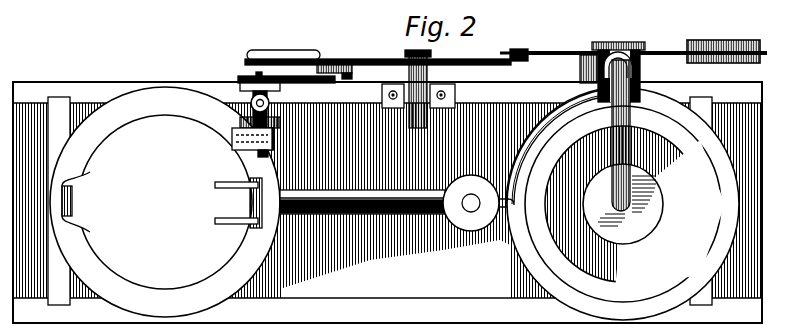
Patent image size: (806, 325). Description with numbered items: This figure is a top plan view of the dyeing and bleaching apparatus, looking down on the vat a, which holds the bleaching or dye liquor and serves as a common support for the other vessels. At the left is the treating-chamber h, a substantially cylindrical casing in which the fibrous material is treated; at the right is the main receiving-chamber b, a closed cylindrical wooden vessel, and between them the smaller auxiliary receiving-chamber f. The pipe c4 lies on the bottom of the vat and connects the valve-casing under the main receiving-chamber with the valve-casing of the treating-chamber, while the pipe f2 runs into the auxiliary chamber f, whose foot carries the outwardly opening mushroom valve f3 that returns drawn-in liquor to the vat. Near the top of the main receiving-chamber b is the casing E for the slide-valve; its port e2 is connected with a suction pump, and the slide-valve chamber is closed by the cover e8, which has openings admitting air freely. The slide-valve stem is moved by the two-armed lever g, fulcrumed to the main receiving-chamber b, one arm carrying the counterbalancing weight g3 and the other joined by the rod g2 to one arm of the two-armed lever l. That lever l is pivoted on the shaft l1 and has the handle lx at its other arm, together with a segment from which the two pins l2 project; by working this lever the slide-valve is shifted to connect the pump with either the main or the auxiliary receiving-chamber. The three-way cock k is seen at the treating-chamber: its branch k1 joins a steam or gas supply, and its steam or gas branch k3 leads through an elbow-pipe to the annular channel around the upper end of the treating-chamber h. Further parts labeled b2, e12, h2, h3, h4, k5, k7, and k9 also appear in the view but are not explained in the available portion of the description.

The vat a is at (387, 202).
The main receiving-chamber b is at (623, 204).
The wheel hub b2 is at (628, 163).
The pipe c4 is at (373, 190).
The casing E is at (640, 48).
The port e2 is at (580, 72).
The cover e8 is at (619, 42).
The bracket connector e12 is at (636, 66).
The auxiliary receiving-chamber f is at (471, 203).
The pipe f2 is at (352, 248).
The mushroom valve f3 is at (506, 154).
The two-armed lever g is at (541, 52).
The rod g2 is at (516, 48).
The weight g3 is at (712, 40).
The treating-chamber h is at (165, 202).
The ring block h2 is at (252, 148).
The ring opening h3 is at (155, 202).
The bracket h4 is at (250, 203).
The three-way valve or cock k is at (240, 105).
The branch k1 is at (278, 120).
The steam or gas branch k3 is at (278, 140).
The arm pivot k5 is at (259, 74).
The arm bar k7 is at (286, 79).
The roller k9 is at (280, 87).
The two-armed lever l is at (376, 60).
The handle lx is at (283, 55).
The shaft l1 is at (411, 56).
The pins l2 is at (338, 61).